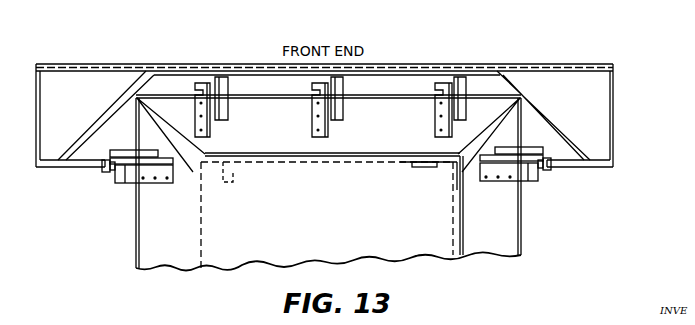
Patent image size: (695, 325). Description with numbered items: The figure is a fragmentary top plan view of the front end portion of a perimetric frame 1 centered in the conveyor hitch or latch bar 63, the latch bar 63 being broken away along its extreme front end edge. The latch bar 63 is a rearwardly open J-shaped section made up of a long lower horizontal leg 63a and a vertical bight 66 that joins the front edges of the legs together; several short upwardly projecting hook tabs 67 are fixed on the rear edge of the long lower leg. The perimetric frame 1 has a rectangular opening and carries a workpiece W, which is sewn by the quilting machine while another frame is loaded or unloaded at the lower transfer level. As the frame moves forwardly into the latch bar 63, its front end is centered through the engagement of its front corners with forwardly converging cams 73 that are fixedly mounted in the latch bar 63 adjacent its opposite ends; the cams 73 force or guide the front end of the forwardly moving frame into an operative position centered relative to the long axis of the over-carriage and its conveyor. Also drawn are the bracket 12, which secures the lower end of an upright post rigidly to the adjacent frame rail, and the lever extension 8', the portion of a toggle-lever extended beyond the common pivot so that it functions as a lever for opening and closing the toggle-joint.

The latch bar 63 is at (185, 55).
The vertical bight 66 is at (573, 63).
The long lower horizontal leg 63a is at (603, 101).
The forwardly converging cams 73 is at (533, 121).
The bracket 12 is at (131, 141).
The lever extension 8' is at (331, 183).
The hook tabs 67 is at (227, 177).
The workpiece W is at (321, 220).
The upper perimetric frame 1 is at (530, 230).